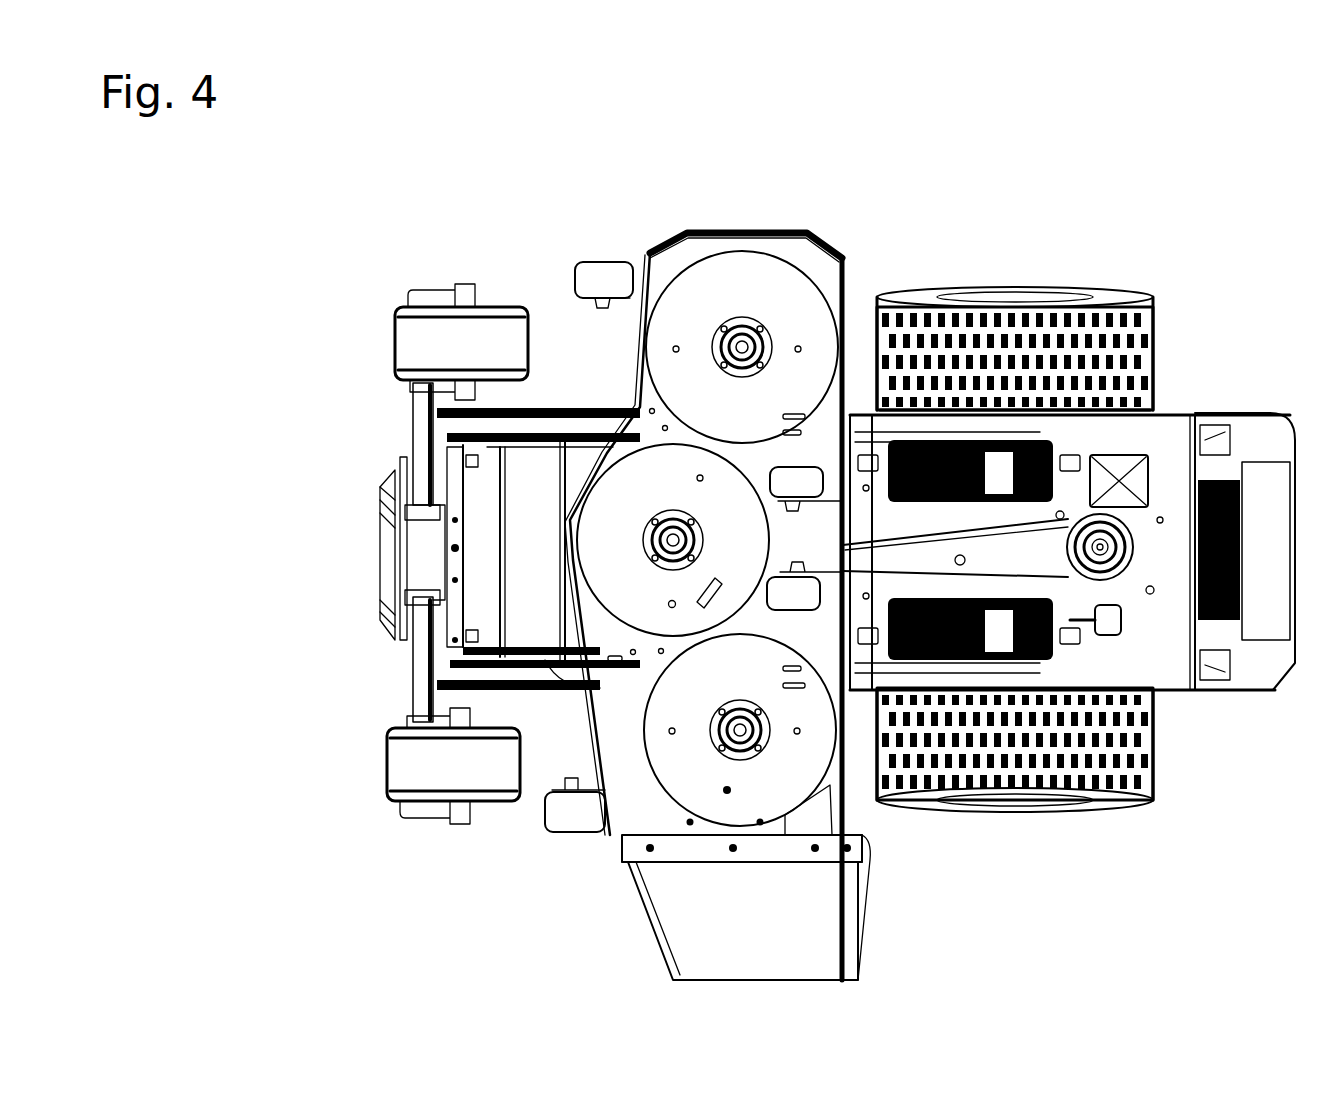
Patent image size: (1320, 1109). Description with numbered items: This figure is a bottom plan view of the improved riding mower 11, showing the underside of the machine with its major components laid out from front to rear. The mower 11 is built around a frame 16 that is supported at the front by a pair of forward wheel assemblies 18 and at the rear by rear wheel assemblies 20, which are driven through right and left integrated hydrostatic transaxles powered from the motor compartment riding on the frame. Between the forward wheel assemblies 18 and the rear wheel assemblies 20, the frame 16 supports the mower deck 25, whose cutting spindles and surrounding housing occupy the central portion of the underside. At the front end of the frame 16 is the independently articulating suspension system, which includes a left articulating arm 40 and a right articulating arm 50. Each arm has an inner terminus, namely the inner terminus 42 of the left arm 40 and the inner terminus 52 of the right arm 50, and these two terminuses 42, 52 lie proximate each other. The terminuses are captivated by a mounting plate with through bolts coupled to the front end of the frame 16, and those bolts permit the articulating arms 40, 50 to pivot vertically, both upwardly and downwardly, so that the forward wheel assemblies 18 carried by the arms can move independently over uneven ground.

The riding mower 11 is at (990, 237).
The frame 16 is at (538, 430).
The forward wheel assemblies 18 is at (436, 344).
The rear wheel assemblies 20 is at (1082, 292).
The mower deck 25 is at (763, 236).
The left articulating arm 40 is at (425, 648).
The inner terminus of left articulating arm 42 is at (405, 597).
The right articulating arm 50 is at (430, 427).
The inner terminus of right articulating arm 52 is at (408, 505).